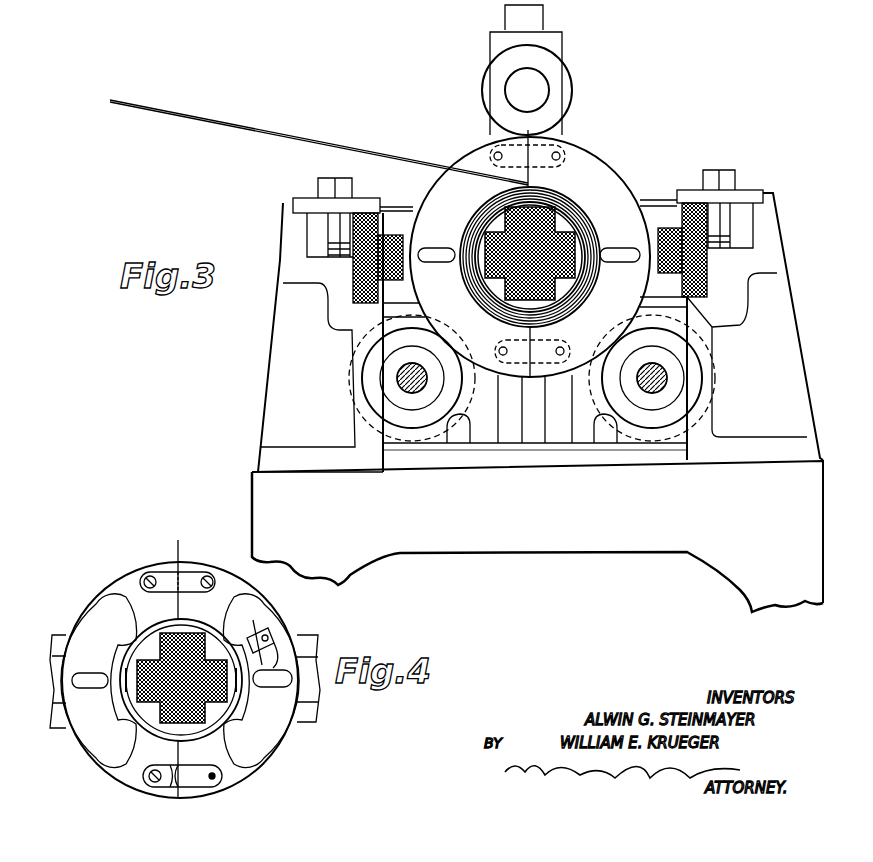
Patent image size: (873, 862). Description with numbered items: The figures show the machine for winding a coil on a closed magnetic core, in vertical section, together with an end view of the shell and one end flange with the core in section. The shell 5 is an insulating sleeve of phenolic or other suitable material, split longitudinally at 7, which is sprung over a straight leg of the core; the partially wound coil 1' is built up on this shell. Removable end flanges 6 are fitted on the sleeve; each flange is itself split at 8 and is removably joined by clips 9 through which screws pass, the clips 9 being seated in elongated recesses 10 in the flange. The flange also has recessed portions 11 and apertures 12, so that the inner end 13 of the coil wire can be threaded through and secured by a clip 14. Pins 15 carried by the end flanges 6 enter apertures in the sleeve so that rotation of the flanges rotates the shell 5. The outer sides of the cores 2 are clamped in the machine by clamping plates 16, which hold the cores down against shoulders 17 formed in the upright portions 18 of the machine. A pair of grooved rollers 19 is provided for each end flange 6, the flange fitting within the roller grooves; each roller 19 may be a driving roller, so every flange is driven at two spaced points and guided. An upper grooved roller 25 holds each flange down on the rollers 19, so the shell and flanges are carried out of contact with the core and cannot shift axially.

In FIG. 3, the partially wound coil 1' is at (364, 203).
In FIG. 3, the cores 2 is at (352, 279).
In FIG. 4, the cores 2 is at (57, 632).
In FIG. 3, the shell 5 is at (566, 197).
In FIG. 4, the shell 5 is at (200, 628).
In FIG. 3, the end flanges 6 is at (618, 186).
In FIG. 4, the end flanges 6 is at (222, 569).
In FIG. 3, the split 7 is at (478, 207).
In FIG. 4, the split 7 is at (140, 637).
In FIG. 4, the split 8 is at (178, 571).
In FIG. 4, the clips 9 is at (162, 575).
In FIG. 4, the elongated recesses 10 is at (203, 768).
In FIG. 4, the recessed portions 11 is at (267, 735).
In FIG. 4, the apertures 12 is at (274, 666).
In FIG. 4, the inner end of the coil of wire 13 is at (258, 622).
In FIG. 4, the clip 14 is at (270, 634).
In FIG. 4, the pins 15 is at (120, 680).
In FIG. 3, the clamping plates 16 is at (746, 190).
In FIG. 3, the shoulders 17 is at (698, 300).
In FIG. 3, the upright portions 18 is at (281, 376).
In FIG. 3, the grooved rollers 19 is at (470, 422).
In FIG. 3, the upper grooved roller 25 is at (482, 96).